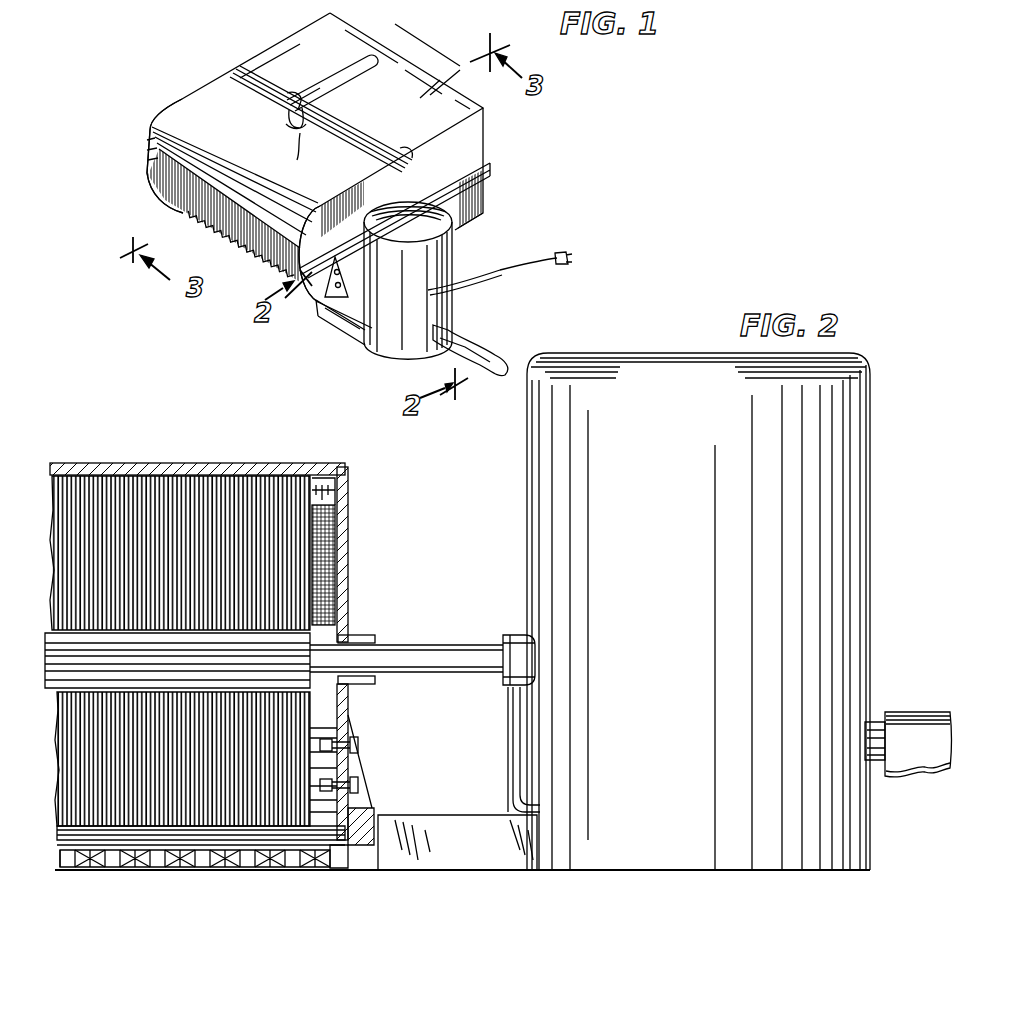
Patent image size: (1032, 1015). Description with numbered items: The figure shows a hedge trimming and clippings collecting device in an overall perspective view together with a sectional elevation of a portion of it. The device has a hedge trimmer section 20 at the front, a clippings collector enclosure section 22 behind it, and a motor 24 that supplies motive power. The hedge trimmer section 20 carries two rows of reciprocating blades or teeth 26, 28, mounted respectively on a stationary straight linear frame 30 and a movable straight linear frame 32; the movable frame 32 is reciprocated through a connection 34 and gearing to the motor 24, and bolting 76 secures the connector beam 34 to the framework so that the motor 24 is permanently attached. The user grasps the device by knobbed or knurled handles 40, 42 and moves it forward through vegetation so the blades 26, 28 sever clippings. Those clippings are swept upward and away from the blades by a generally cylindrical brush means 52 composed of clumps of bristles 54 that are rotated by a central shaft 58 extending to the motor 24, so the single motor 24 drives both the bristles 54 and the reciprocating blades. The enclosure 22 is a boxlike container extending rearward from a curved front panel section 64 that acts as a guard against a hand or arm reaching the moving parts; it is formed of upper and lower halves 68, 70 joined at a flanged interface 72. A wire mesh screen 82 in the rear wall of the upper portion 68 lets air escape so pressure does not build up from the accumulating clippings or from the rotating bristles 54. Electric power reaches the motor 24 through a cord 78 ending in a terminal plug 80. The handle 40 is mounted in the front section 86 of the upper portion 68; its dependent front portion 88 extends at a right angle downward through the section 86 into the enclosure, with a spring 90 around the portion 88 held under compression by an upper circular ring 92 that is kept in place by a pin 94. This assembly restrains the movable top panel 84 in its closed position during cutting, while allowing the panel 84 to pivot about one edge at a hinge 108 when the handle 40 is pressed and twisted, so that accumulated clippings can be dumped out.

In FIG. 1, the hedge trimmer section 20 is at (259, 270).
In FIG. 1, the clippings collector enclosure section 22 is at (413, 45).
In FIG. 1, the motor 24 is at (453, 245).
In FIG. 2, the motor 24 is at (858, 450).
In FIG. 1, the row of reciprocating blades 26 is at (200, 157).
In FIG. 2, the row of reciprocating blades 26 is at (60, 840).
In FIG. 2, the row of reciprocating blades 28 is at (93, 867).
In FIG. 2, the stationary straight linear frame 30 is at (365, 853).
In FIG. 2, the movable straight linear frame 32 is at (350, 867).
In FIG. 1, the connection 34 is at (345, 318).
In FIG. 2, the connection 34 is at (472, 850).
In FIG. 1, the handle 40 is at (347, 77).
In FIG. 1, the handle 42 is at (487, 353).
In FIG. 2, the handle 42 is at (920, 727).
In FIG. 1, the brush means 52 is at (217, 230).
In FIG. 2, the bristles 54 is at (140, 490).
In FIG. 1, the shaft 58 is at (317, 223).
In FIG. 2, the shaft 58 is at (435, 653).
In FIG. 1, the curved front panel section 64 is at (160, 143).
In FIG. 1, the upper section 68 is at (487, 127).
In FIG. 2, the upper section 68 is at (343, 558).
In FIG. 1, the lower section 70 is at (480, 190).
In FIG. 2, the lower section 70 is at (342, 703).
In FIG. 1, the flanged interface 72 is at (490, 167).
In FIG. 2, the bolting 76 is at (367, 783).
In FIG. 1, the cord 78 is at (522, 262).
In FIG. 1, the terminal plug 80 is at (559, 256).
In FIG. 2, the wire mesh screen 82 is at (322, 513).
In FIG. 1, the movable top panel 84 is at (428, 93).
In FIG. 1, the front section 86 is at (217, 88).
In FIG. 2, the front section 86 is at (275, 465).
In FIG. 1, the dependent front portion 88 is at (287, 100).
In FIG. 1, the spring 90 is at (302, 134).
In FIG. 1, the upper circular ring 92 is at (287, 117).
In FIG. 1, the pin 94 is at (307, 117).
In FIG. 1, the hinge 108 is at (408, 153).